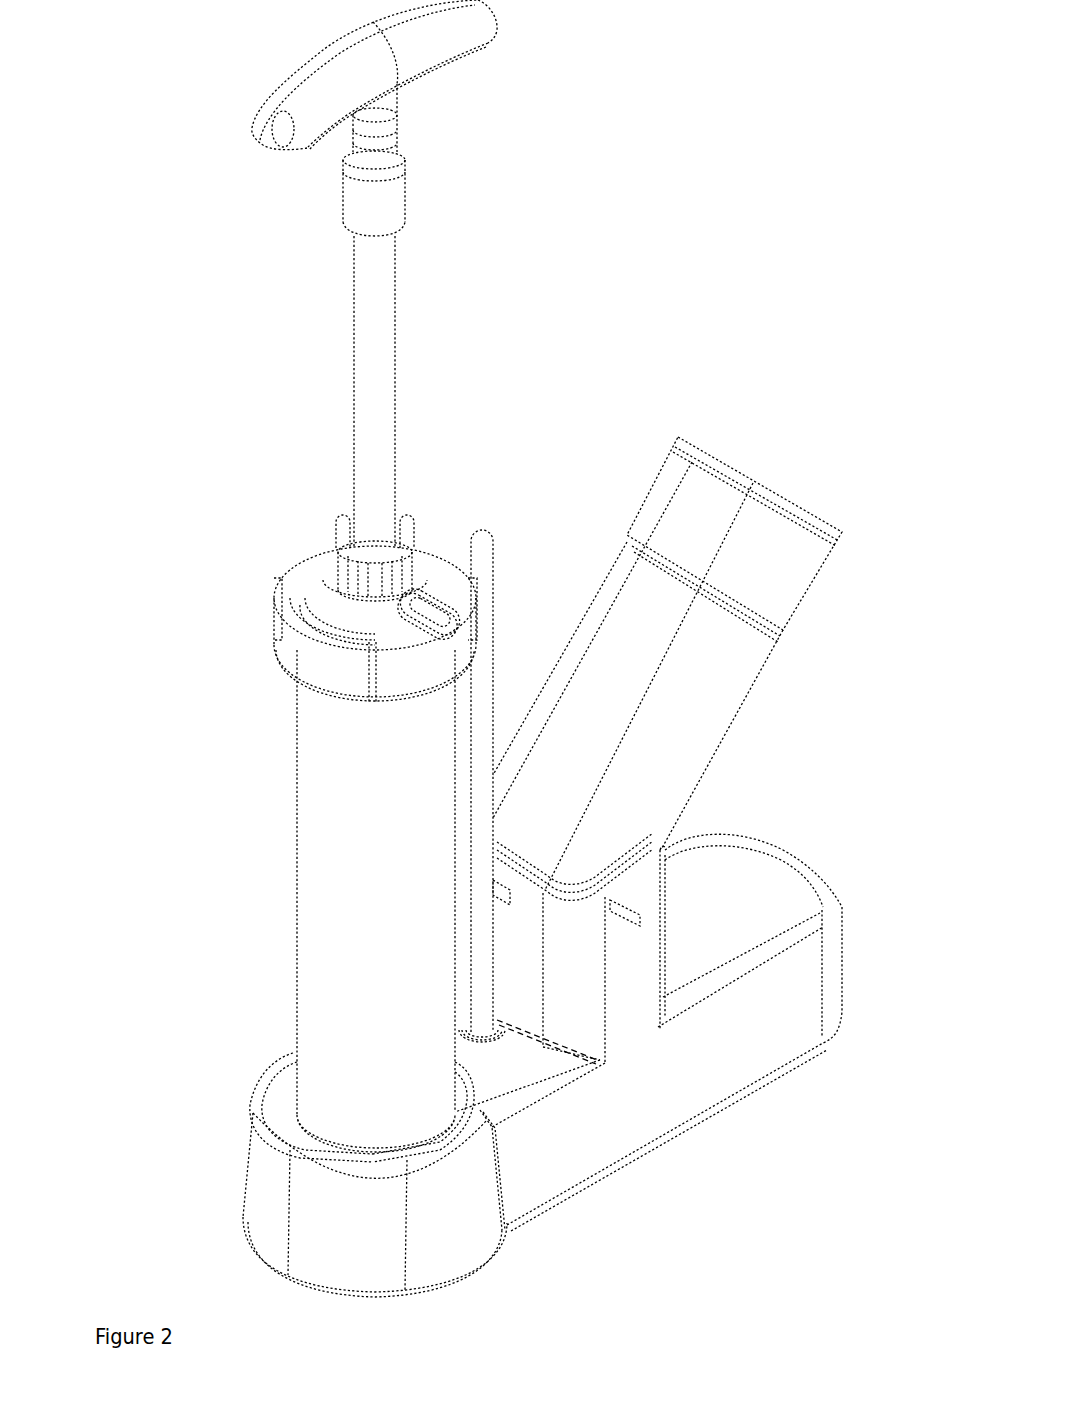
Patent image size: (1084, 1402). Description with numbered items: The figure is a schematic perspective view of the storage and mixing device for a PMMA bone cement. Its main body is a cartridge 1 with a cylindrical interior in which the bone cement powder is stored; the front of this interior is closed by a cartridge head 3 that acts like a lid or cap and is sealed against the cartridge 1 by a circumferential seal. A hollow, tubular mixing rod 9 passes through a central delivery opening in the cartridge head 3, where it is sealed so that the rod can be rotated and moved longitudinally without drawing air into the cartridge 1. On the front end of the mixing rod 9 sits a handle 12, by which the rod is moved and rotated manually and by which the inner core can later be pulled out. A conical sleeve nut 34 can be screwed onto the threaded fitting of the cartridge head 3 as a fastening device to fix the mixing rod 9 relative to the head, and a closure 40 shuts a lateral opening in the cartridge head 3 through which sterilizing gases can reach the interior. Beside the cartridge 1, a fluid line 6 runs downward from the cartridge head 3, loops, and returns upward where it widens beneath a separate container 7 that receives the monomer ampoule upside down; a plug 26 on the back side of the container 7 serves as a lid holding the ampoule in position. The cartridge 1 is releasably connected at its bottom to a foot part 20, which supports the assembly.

The cartridge 1 is at (330, 767).
The cartridge head 3 is at (312, 600).
The fluid line 6 is at (481, 688).
The container 7 is at (673, 707).
The mixing rod 9 is at (362, 384).
The handle 12 is at (428, 33).
The foot part 20 is at (288, 1183).
The plug 26 is at (753, 481).
The sleeve nut 34 is at (355, 546).
The closure 40 is at (428, 604).